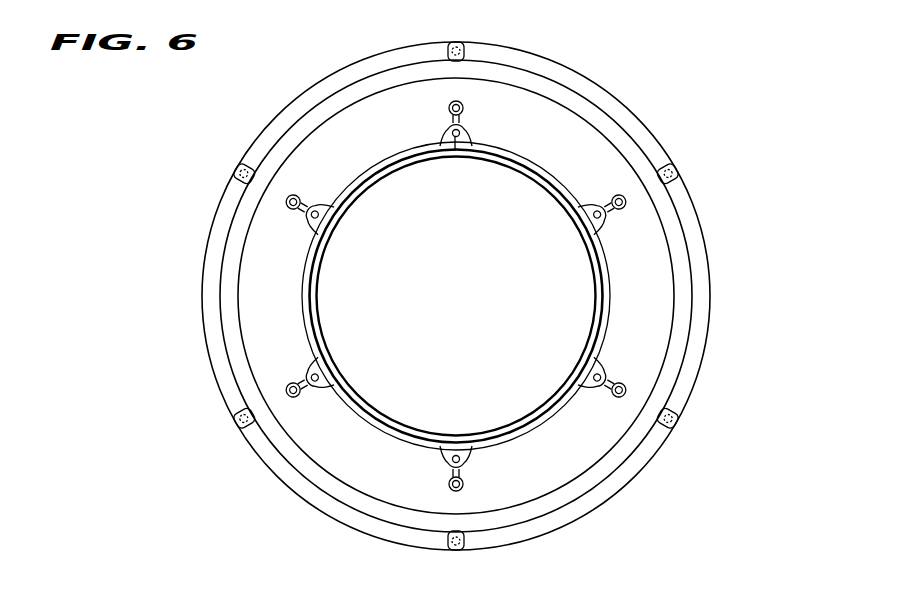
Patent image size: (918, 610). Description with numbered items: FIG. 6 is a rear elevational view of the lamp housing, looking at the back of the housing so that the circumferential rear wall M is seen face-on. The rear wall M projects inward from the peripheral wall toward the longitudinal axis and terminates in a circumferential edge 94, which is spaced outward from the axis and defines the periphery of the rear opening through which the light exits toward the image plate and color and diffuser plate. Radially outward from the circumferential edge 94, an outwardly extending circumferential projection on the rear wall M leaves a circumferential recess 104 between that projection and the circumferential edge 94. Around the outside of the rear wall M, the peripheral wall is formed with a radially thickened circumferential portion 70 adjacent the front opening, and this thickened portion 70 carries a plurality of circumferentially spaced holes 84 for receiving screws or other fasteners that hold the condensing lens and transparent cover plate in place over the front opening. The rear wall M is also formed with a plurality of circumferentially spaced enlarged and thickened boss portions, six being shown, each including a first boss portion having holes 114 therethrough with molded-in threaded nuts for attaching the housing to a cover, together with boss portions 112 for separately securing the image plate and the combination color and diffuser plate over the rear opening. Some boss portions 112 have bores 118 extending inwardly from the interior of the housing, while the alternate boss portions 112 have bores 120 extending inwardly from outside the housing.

The radially thickened circumferential portion 70 is at (697, 376).
The circumferential rear wall M is at (684, 290).
The circumferentially spaced holes 84 is at (671, 158).
The circumferential recess 104 is at (314, 333).
The circumferential edge 94 is at (356, 392).
The boss portions 112 is at (446, 130).
The holes 114 is at (463, 107).
The bores 118 is at (455, 152).
The bores 120 is at (320, 218).